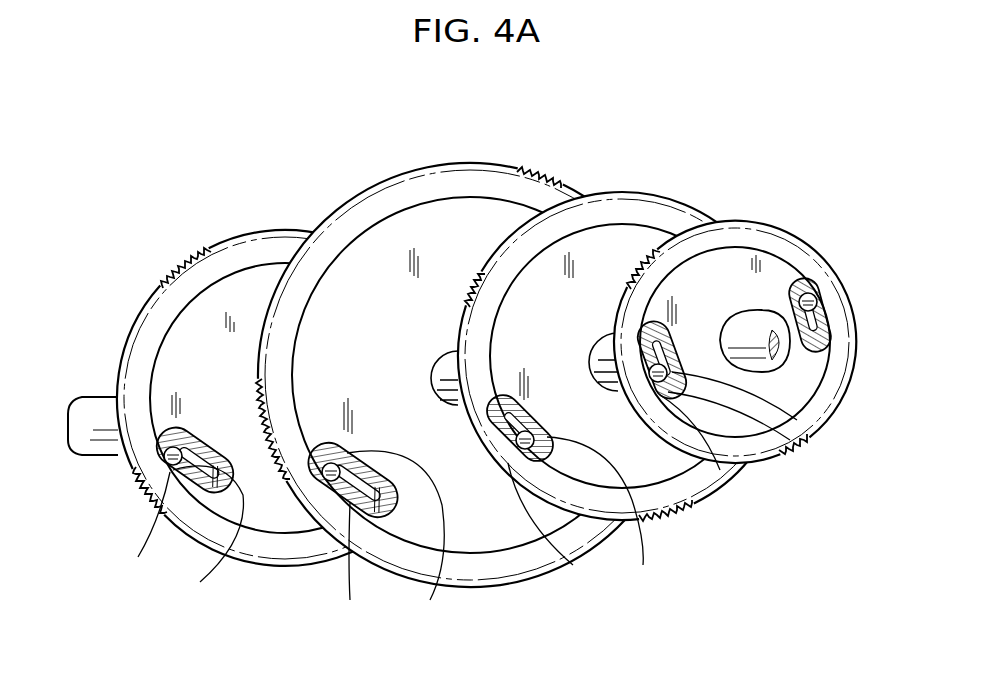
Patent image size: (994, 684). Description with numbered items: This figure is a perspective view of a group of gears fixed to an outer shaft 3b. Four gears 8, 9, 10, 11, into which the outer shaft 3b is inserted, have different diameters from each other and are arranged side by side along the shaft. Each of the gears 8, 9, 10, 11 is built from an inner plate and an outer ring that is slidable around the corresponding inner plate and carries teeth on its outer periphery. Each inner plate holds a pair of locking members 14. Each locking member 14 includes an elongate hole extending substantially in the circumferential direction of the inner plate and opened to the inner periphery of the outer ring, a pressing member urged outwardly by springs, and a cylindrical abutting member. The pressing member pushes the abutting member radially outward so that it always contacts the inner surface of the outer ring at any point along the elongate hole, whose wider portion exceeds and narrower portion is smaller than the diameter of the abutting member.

The outer shaft 3b is at (815, 355).
The gear 8 is at (783, 226).
The gear 9 is at (647, 190).
The gear 10 is at (476, 160).
The gear 11 is at (258, 228).
The locking member 14 is at (682, 368).